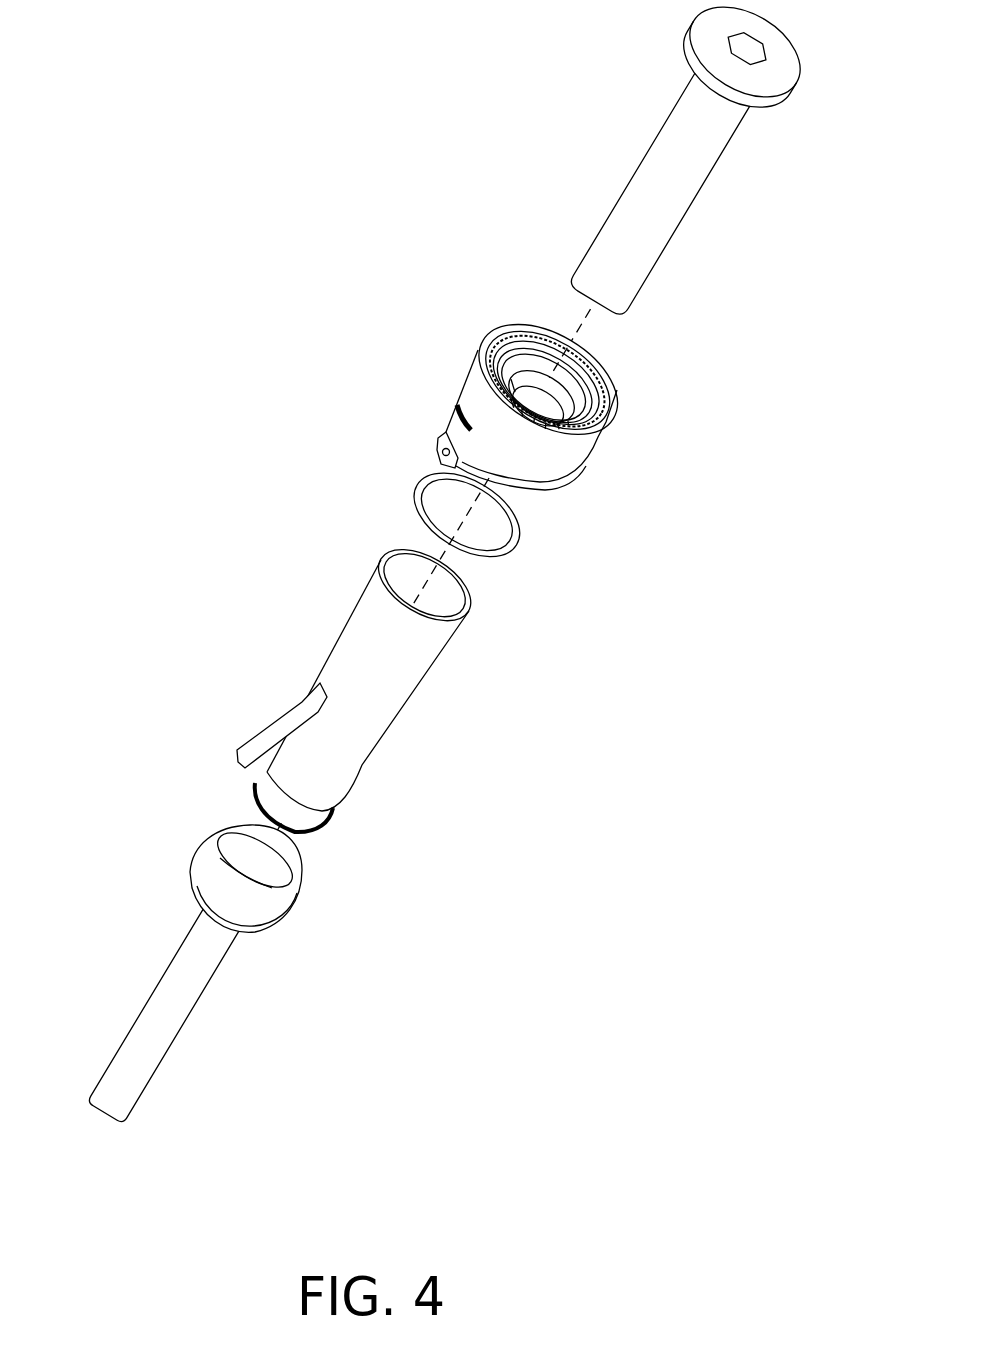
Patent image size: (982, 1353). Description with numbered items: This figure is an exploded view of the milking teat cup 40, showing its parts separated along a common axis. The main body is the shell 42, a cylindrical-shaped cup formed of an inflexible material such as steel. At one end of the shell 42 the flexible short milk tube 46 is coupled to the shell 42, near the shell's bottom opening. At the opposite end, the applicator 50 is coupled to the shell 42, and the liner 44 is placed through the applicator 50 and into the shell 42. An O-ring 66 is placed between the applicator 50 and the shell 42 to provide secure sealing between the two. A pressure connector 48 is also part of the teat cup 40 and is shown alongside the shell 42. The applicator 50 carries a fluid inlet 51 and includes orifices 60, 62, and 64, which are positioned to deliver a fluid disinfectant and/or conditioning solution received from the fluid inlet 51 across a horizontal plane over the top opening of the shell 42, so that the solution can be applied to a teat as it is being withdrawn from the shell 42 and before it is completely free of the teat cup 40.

The milking teat cup 40 is at (451, 562).
The shell 42 is at (348, 624).
The liner 44 is at (623, 193).
The flexible short milk tube 46 is at (158, 999).
The pressure connector 48 is at (275, 723).
The applicator 50 is at (476, 368).
The fluid inlet 51 is at (440, 456).
The orifice 60 is at (510, 333).
The orifice 62 is at (613, 383).
The orifice 64 is at (543, 428).
The O-ring 66 is at (415, 493).